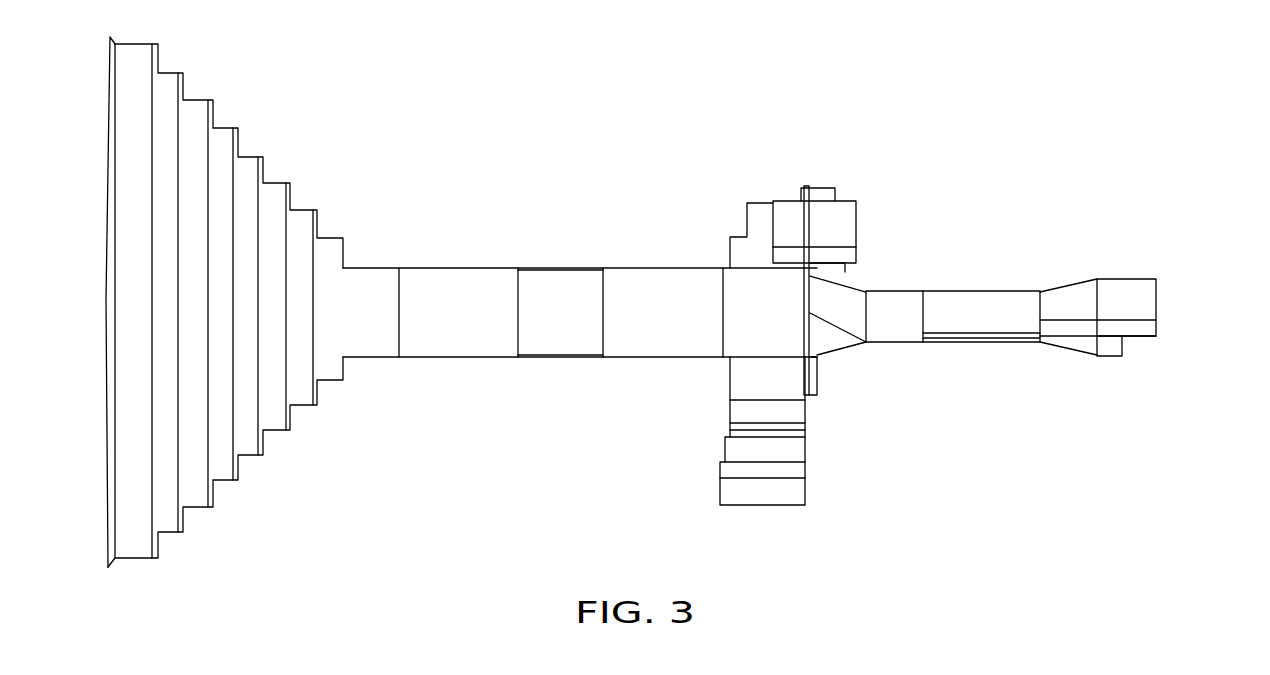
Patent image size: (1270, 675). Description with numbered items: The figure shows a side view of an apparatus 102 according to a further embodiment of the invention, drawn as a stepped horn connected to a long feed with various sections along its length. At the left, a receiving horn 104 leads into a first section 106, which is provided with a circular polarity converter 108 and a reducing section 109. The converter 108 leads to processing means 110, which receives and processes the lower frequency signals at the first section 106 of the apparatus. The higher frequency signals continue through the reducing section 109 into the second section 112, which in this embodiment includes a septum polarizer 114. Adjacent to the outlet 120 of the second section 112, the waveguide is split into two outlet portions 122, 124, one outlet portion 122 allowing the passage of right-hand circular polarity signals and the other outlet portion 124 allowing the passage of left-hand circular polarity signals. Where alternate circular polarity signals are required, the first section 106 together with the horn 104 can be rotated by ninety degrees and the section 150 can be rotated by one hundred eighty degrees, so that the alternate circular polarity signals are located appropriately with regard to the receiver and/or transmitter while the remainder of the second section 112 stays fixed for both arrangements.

The apparatus 102 is at (380, 250).
The receiving horn 104 is at (203, 110).
The first section 106 is at (540, 282).
The circular polarity converter 108 is at (557, 342).
The reducing section 109 is at (843, 292).
The processing means 110 is at (862, 342).
The second section 112 is at (893, 297).
The septum polarizer 114 is at (1004, 298).
The outlet 120 is at (1039, 347).
The outlet portion 122 is at (1158, 329).
The outlet portion 124 is at (1122, 347).
The section 150 is at (1142, 273).